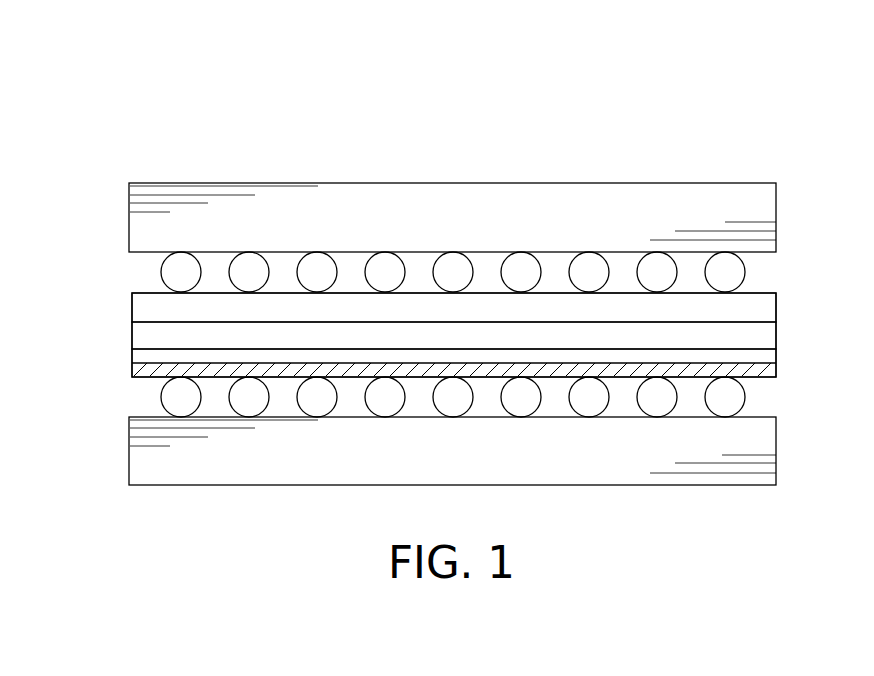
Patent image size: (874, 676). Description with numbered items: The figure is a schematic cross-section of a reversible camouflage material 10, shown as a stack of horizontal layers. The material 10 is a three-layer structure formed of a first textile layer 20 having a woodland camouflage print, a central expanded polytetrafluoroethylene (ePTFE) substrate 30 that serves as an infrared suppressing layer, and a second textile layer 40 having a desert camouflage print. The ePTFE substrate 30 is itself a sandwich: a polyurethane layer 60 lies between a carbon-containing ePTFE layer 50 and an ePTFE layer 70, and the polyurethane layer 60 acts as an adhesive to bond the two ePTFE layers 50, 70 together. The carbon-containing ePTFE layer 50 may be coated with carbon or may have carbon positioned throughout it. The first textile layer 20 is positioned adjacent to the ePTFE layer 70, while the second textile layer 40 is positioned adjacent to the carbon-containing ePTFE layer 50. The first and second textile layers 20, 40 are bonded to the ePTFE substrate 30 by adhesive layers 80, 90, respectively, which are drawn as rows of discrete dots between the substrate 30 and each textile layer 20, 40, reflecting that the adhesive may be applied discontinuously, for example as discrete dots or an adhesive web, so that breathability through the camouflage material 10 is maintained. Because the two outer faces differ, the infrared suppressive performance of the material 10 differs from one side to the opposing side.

The reversible camouflage material 10 is at (650, 90).
The first textile layer 20 is at (776, 215).
The ePTFE substrate 30 is at (783, 293).
The second textile layer 40 is at (776, 445).
The carbon-containing ePTFE layer 50 is at (130, 349).
The polyurethane layer 60 is at (132, 334).
The ePTFE layer 70 is at (132, 302).
The adhesive layer 80 is at (746, 272).
The adhesive layer 90 is at (746, 390).